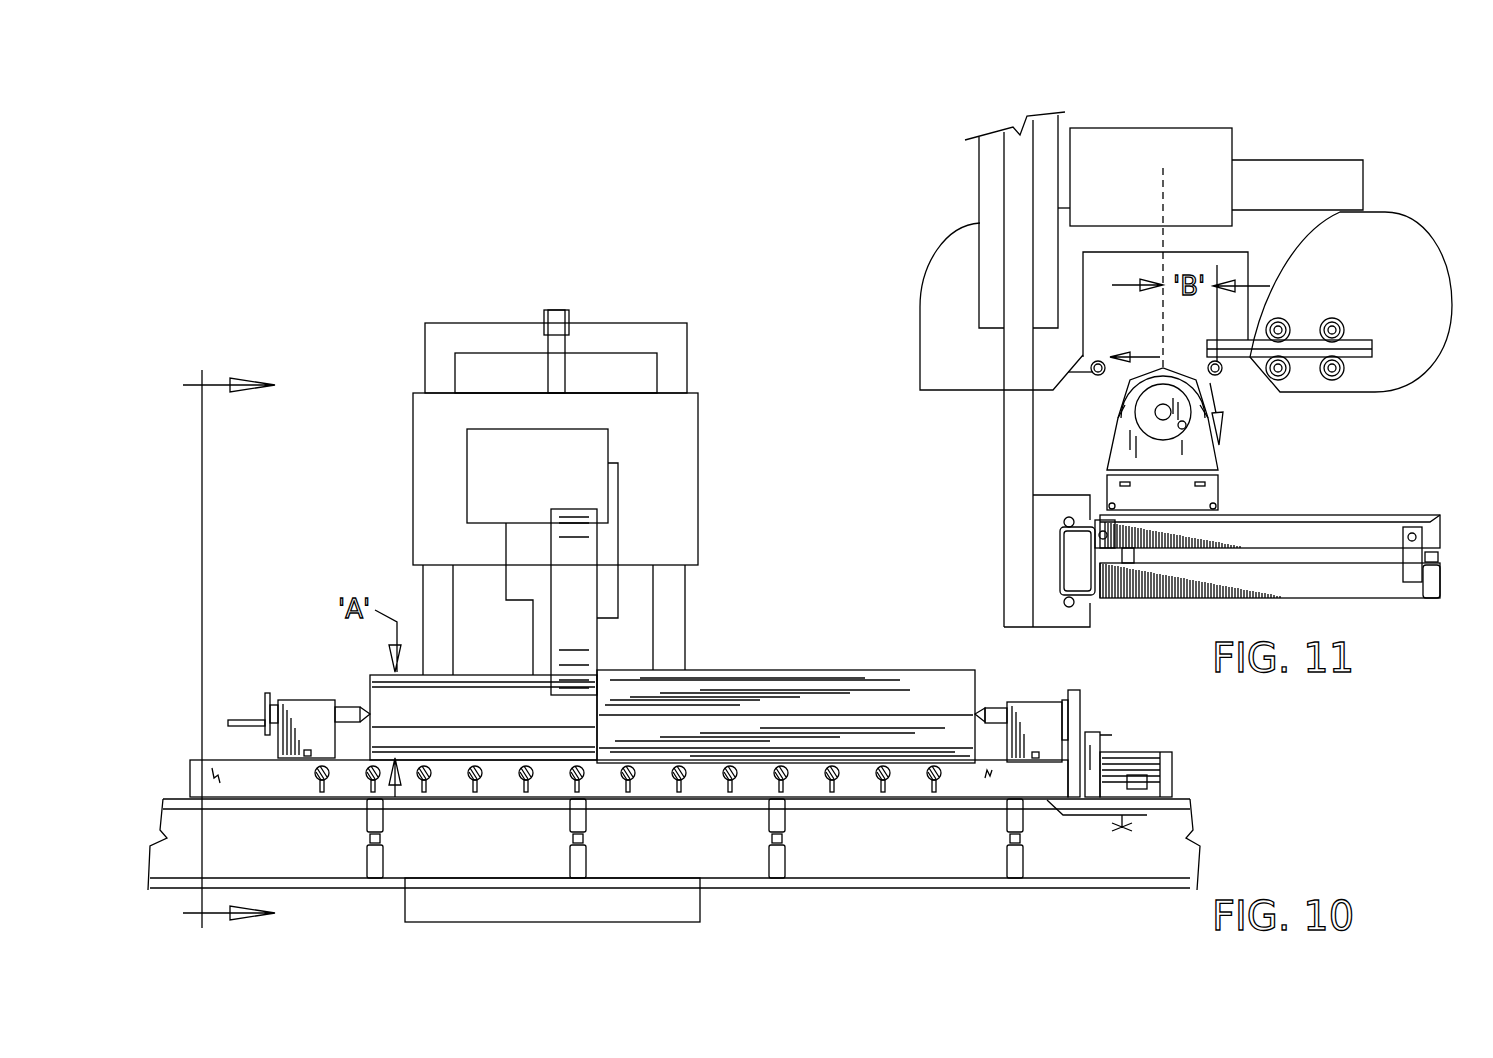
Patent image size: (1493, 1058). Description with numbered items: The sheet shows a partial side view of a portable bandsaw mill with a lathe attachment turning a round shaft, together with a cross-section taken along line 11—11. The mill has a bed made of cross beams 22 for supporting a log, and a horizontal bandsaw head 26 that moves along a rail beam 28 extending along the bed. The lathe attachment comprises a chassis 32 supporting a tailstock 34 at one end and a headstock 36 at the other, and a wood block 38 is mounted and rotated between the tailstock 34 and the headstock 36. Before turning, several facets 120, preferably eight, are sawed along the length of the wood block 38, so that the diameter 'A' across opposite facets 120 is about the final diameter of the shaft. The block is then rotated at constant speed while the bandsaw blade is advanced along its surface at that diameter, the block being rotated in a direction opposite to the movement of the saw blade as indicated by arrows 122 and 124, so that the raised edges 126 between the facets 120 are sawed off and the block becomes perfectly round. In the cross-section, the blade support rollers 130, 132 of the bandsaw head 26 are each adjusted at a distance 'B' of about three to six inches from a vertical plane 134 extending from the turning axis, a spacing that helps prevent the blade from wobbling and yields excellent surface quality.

In FIG. 10, the section line 11— 11 is at (253, 641).
In FIG. 10, the cross beams 22 is at (785, 822).
In FIG. 11, the cross beams 22 is at (1365, 515).
In FIG. 10, the bandsaw head 26 is at (597, 600).
In FIG. 11, the bandsaw head 26 is at (1427, 367).
In FIG. 10, the rail beam 28 is at (1040, 890).
In FIG. 11, the rail beam 28 is at (1060, 560).
In FIG. 10, the chassis 32 is at (237, 760).
In FIG. 11, the chassis 32 is at (1222, 492).
In FIG. 10, the tailstock 34 is at (305, 700).
In FIG. 11, the tailstock 34 is at (1107, 482).
In FIG. 10, the headstock 36 is at (1192, 727).
In FIG. 10, the wood block 38 is at (778, 670).
In FIG. 11, the facets 120 is at (1123, 393).
In FIG. 11, the arrow indicating rotation of wood block 122 is at (1225, 397).
In FIG. 11, the arrow indicating saw blade movement 124 is at (1150, 353).
In FIG. 11, the raised edges 126 is at (1107, 455).
In FIG. 11, the blade support roller 130 is at (1098, 361).
In FIG. 11, the blade support roller 132 is at (1218, 365).
In FIG. 11, the vertical plane 134 is at (1165, 197).